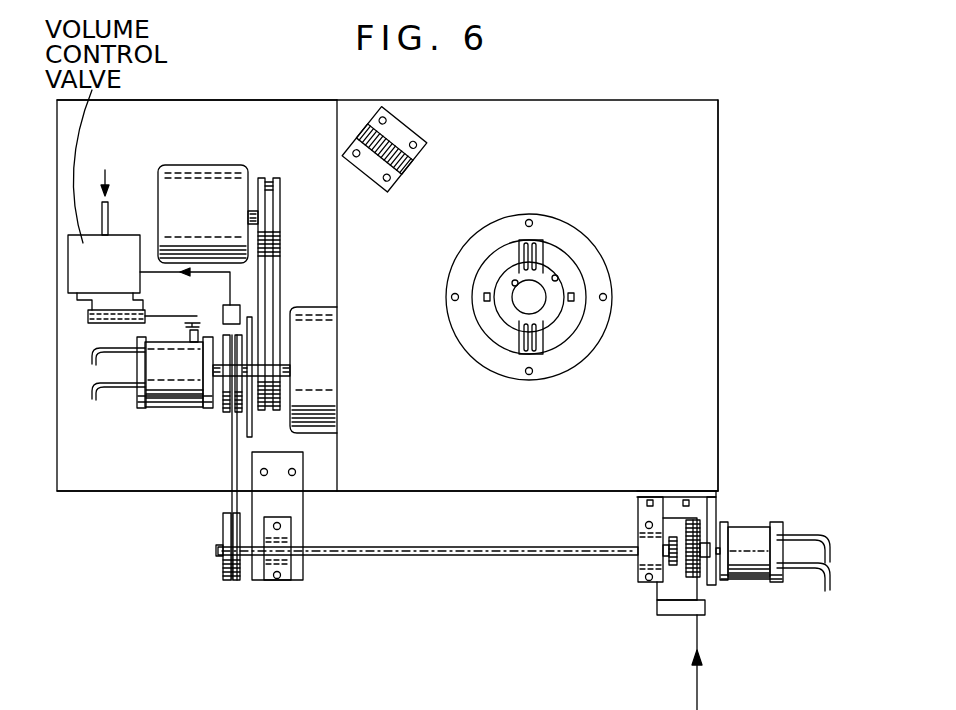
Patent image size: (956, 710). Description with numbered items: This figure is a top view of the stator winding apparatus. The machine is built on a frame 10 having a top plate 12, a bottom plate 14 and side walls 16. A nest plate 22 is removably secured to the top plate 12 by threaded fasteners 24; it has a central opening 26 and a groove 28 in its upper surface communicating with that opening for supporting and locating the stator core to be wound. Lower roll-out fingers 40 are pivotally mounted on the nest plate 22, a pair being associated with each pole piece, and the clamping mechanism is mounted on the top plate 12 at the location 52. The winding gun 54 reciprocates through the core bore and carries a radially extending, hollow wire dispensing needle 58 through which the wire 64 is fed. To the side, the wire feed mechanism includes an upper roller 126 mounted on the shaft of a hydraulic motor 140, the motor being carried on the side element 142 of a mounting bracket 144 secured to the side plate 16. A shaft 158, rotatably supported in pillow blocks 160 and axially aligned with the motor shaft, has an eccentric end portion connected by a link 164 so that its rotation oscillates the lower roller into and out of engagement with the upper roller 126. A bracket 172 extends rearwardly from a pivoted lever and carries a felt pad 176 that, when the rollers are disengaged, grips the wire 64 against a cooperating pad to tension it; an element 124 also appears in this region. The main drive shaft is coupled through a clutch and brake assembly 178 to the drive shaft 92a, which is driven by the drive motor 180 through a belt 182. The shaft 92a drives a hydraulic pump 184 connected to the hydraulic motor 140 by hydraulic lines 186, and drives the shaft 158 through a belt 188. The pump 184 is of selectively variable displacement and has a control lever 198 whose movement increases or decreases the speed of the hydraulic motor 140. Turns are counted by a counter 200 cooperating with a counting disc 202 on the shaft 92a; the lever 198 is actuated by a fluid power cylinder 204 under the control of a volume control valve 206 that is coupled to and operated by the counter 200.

The frame 10 is at (646, 93).
The top plate 12 is at (719, 137).
The bottom plate 14 is at (287, 110).
The side walls 16 is at (437, 492).
The nest plate 22 is at (586, 246).
The threaded fasteners 24 is at (450, 296).
The central opening 26 is at (559, 278).
The groove 28 is at (562, 318).
The lower roll-out fingers 40 is at (533, 240).
The clamping mechanism mounting 52 is at (430, 136).
The winding gun 54 is at (520, 300).
The wire dispensing needle 58 is at (512, 281).
The wire 64 is at (712, 686).
The drive shaft 92a is at (282, 363).
The support plate 124 is at (630, 582).
The upper roller 126 is at (695, 520).
The hydraulic motor 140 is at (750, 530).
The side element 142 is at (712, 496).
The mounting bracket 144 is at (632, 494).
The shaft 158 is at (440, 556).
The pillow blocks 160 is at (280, 580).
The link 164 is at (673, 566).
The bracket 172 is at (656, 590).
The felt pad 176 is at (705, 605).
The clutch and brake assembly 178 is at (322, 410).
The drive motor 180 is at (170, 216).
The belt 182 is at (288, 262).
The hydraulic pump 184 is at (157, 380).
The hydraulic lines 186 is at (88, 395).
The belt 188 is at (228, 440).
The control lever 198 is at (210, 278).
The counter 200 is at (243, 305).
The counting disc 202 is at (240, 440).
The fluid power cylinder 204 is at (87, 312).
The volume control valve 206 is at (75, 251).